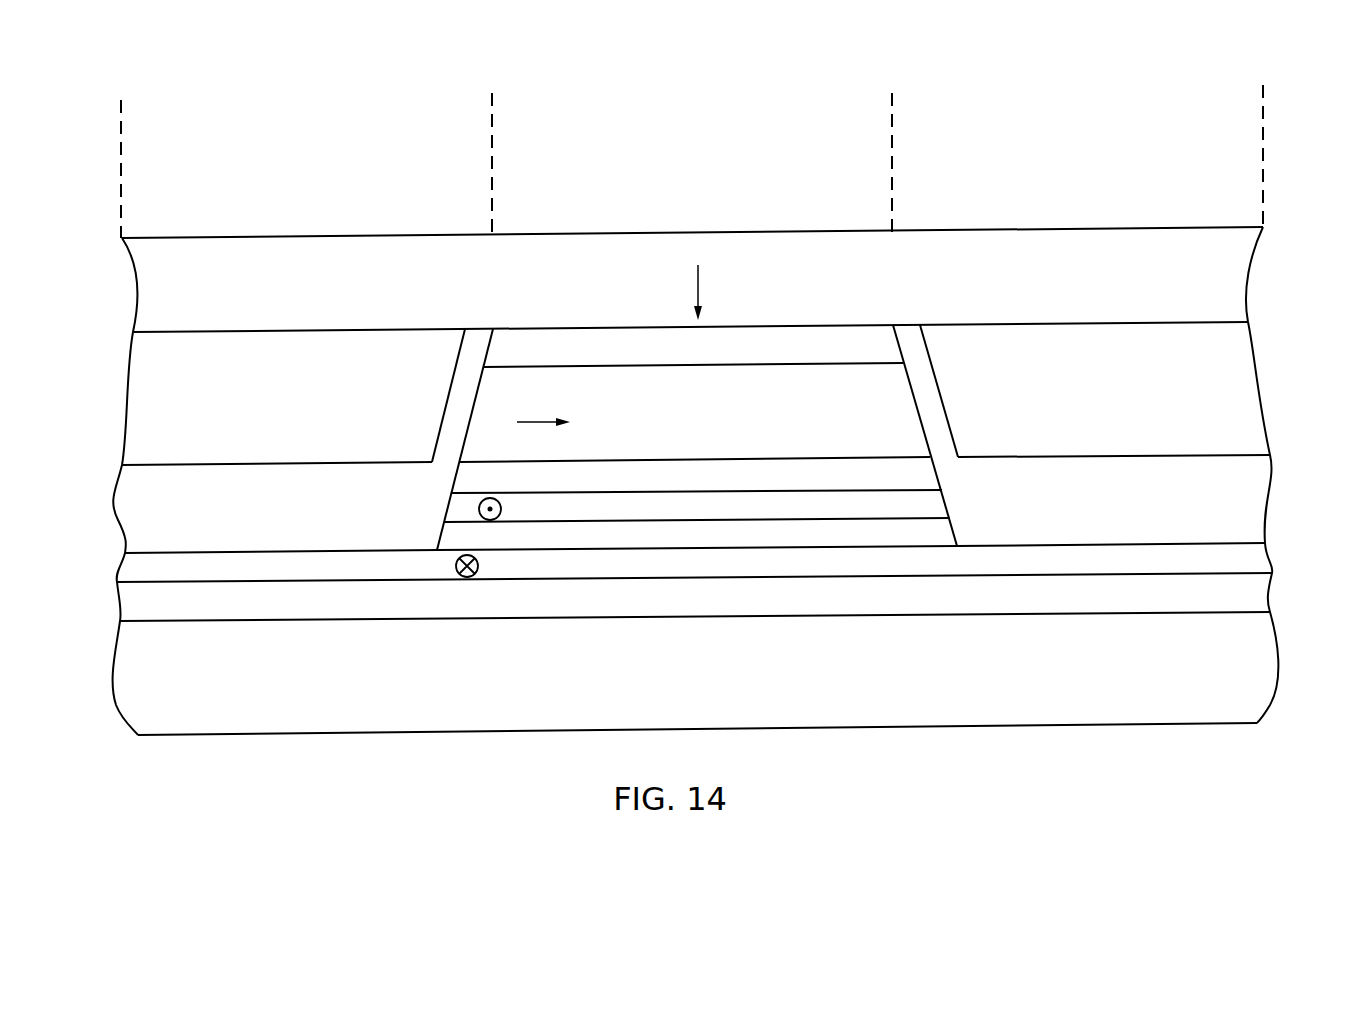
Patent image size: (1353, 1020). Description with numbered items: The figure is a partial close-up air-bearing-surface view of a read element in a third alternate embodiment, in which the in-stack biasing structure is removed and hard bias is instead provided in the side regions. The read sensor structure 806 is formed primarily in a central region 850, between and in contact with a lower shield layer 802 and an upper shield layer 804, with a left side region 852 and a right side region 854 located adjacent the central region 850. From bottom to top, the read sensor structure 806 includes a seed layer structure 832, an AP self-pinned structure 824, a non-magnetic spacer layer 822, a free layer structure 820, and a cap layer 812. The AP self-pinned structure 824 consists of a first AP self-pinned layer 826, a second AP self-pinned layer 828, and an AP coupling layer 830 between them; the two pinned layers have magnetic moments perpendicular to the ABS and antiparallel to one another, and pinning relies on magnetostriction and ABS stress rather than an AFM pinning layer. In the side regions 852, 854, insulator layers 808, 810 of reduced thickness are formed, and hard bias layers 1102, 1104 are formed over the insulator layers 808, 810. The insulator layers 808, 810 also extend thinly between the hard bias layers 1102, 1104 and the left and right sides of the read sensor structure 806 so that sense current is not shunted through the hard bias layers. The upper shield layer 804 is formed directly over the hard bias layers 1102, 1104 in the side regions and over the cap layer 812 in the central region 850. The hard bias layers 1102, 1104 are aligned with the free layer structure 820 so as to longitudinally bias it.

The lower shield layer 802 is at (1068, 703).
The upper shield layer 804 is at (1135, 262).
The read sensor structure 806 is at (405, 374).
The insulator layer 808 is at (143, 498).
The insulator layer 810 is at (1250, 493).
The cap layer 812 is at (878, 350).
The free layer structure 820 is at (892, 393).
The spacer layer 822 is at (905, 470).
The AP self-pinned structure 824 is at (973, 577).
The first AP self-pinned layer 826 is at (147, 567).
The second AP self-pinned layer 828 is at (457, 503).
The AP coupling layer 830 is at (452, 543).
The seed layer structure 832 is at (143, 603).
The central region 850 is at (692, 164).
The left side region 852 is at (230, 169).
The right side region 854 is at (1149, 156).
The hard bias layer 1102 is at (168, 408).
The hard bias layer 1104 is at (1232, 400).